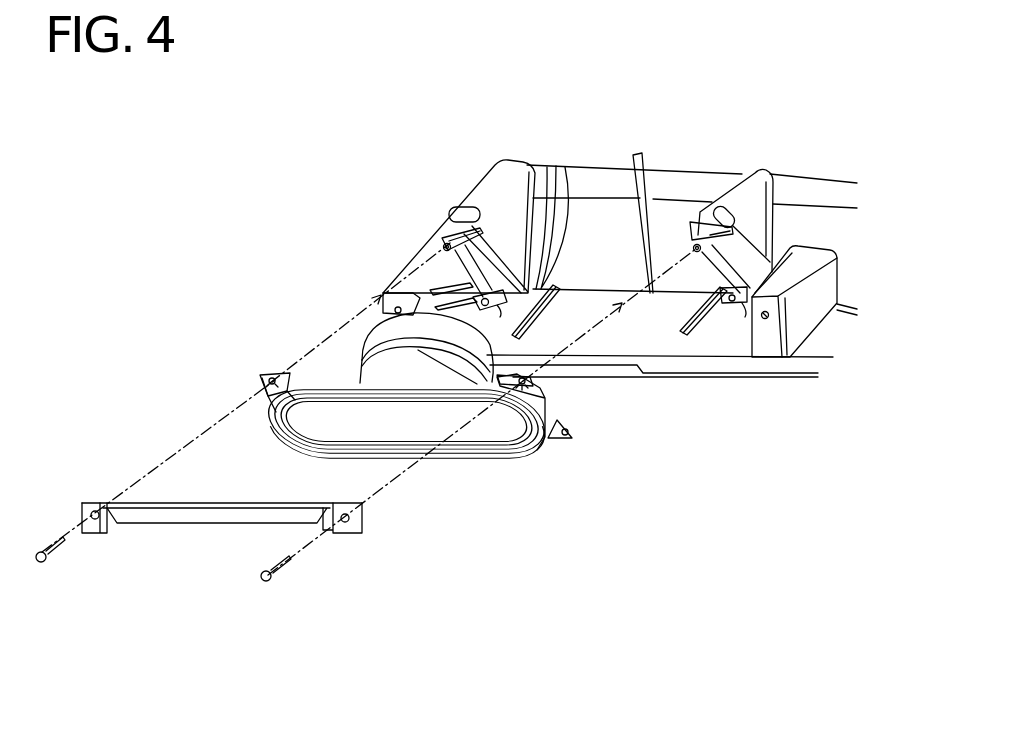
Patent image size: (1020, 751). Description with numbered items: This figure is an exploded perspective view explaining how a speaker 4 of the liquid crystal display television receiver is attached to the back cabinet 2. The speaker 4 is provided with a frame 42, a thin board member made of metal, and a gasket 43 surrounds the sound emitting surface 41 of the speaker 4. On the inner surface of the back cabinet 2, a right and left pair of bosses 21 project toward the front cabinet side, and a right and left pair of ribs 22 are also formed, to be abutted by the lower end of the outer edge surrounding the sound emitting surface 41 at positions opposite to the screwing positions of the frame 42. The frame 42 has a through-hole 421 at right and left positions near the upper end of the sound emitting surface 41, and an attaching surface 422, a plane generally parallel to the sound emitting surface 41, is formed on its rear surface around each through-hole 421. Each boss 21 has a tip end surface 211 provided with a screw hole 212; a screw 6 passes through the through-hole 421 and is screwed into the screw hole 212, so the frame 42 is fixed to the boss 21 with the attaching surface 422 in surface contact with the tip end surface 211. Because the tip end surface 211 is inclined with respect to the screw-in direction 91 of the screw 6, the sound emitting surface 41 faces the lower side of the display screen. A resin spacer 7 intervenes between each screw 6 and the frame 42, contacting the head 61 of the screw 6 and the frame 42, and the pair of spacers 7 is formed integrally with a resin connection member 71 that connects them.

The back cabinet 2 is at (822, 183).
The boss 21 is at (455, 208).
The tip end surface 211 is at (444, 244).
The screw hole 212 is at (444, 250).
The rib 22 is at (548, 313).
The speaker 4 is at (363, 380).
The sound emitting surface 41 is at (362, 430).
The frame 42 is at (541, 400).
The through-hole 421 is at (271, 398).
The attaching surface 422 is at (272, 375).
The gasket 43 is at (545, 452).
The screw 6 is at (52, 545).
The head 61 is at (40, 563).
The spacer 7 is at (92, 535).
The connection member 71 is at (197, 517).
The screw-in direction 91 is at (483, 313).